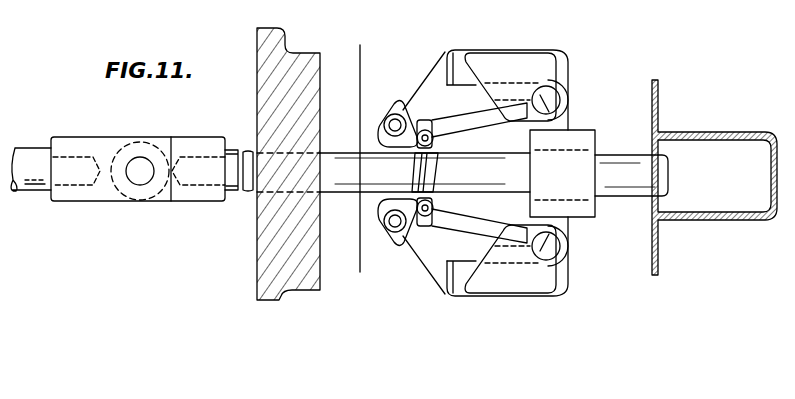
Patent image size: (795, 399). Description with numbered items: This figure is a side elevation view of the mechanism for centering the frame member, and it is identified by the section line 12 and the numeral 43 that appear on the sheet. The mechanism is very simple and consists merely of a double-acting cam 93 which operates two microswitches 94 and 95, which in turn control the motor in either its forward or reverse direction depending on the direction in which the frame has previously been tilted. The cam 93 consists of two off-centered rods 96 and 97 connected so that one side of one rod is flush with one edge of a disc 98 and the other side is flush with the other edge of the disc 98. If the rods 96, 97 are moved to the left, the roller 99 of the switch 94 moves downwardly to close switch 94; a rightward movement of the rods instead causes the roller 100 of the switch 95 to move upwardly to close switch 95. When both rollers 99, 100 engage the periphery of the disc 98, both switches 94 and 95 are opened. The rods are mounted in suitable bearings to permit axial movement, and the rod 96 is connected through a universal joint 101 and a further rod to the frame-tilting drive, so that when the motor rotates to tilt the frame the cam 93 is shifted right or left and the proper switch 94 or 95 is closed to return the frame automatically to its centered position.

The section line 12- 12 is at (352, 48).
The drive shaft 43 is at (89, 95).
The double-acting cam 93 is at (466, 155).
The microswitch 94 is at (458, 57).
The microswitch 95 is at (458, 292).
The off-centered rod 96 is at (331, 152).
The off-centered rod 97 is at (604, 157).
The disc 98 is at (414, 171).
The roller 99 is at (400, 115).
The roller 100 is at (400, 240).
The universal joint 101 is at (134, 144).